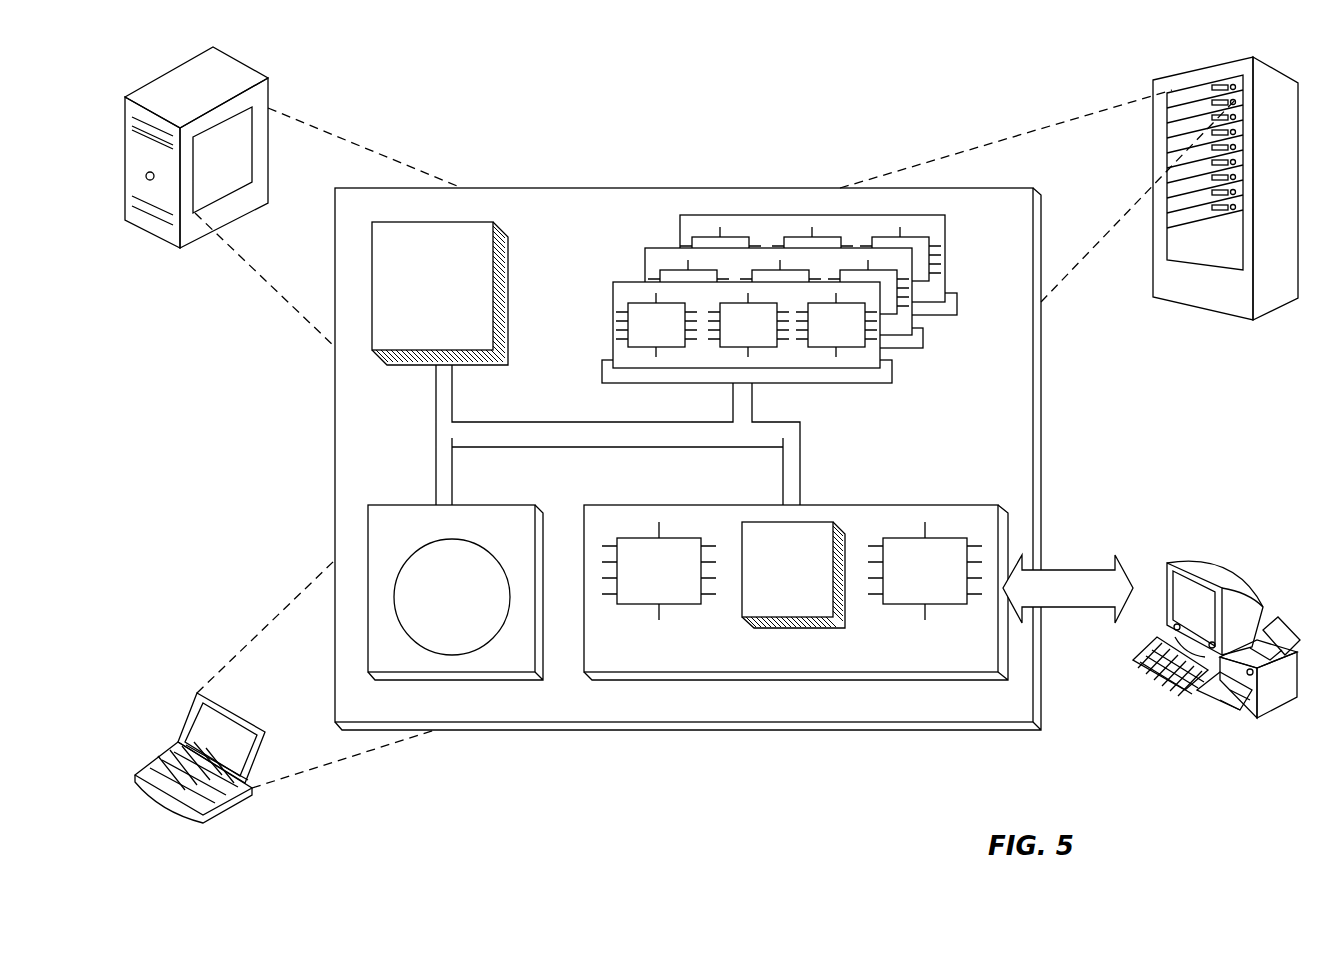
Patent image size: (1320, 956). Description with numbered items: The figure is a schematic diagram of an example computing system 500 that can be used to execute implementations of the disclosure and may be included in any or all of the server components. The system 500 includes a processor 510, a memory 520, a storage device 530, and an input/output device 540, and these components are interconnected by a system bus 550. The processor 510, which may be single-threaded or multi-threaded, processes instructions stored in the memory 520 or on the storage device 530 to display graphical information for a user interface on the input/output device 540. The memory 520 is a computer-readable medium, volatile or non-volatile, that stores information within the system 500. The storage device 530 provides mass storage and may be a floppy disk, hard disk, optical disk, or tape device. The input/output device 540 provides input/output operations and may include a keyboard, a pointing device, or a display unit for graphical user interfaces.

The computing system 500 is at (517, 112).
The processor 510 is at (440, 293).
The memory 520 is at (951, 348).
The storage device 530 is at (455, 592).
The input/output device 540 is at (1164, 563).
The system bus 550 is at (612, 437).